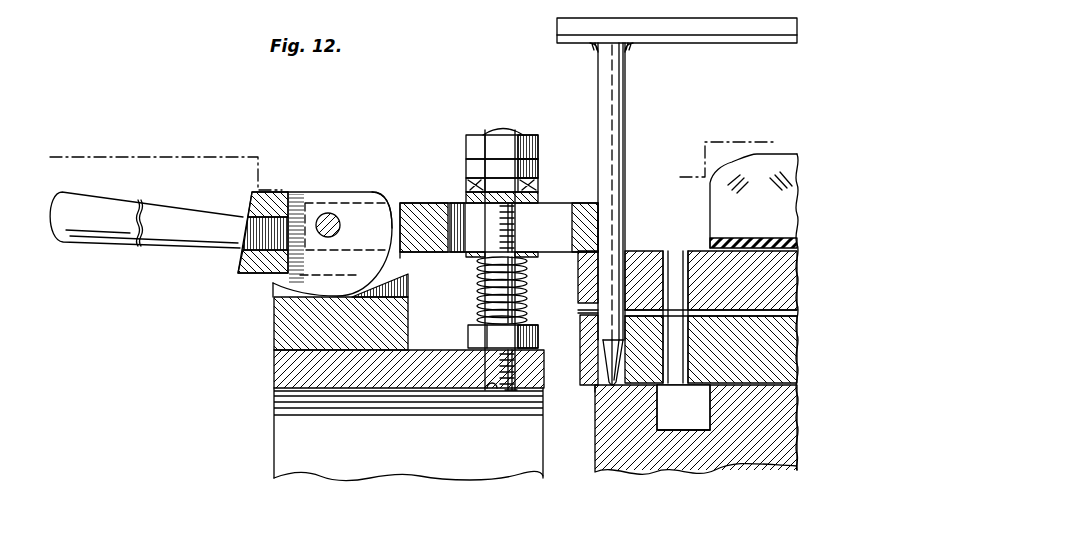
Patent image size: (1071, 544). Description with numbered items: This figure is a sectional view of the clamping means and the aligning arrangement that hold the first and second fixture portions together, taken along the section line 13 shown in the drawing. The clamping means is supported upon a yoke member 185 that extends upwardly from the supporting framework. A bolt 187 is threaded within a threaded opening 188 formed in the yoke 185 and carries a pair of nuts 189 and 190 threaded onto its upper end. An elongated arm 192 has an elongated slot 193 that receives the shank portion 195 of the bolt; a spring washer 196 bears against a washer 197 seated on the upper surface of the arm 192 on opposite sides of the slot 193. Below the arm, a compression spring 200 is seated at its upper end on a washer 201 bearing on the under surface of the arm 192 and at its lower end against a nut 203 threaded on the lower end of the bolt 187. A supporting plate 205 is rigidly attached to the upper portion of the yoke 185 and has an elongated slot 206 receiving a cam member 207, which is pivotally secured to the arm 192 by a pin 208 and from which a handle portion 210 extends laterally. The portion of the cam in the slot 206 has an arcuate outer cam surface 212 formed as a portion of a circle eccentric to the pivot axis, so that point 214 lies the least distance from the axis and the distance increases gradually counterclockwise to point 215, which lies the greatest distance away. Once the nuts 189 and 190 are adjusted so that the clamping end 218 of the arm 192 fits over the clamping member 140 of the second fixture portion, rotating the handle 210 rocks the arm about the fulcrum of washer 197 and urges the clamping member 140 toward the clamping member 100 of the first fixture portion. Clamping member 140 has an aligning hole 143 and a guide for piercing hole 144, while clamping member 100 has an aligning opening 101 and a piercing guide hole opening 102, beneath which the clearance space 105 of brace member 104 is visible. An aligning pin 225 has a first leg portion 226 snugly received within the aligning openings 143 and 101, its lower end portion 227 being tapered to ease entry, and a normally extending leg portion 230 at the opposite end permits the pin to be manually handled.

The section line 13- 13 is at (72, 150).
The handle portion 210 is at (165, 205).
The point on cam spaced greatest distance from pivot axis 215 is at (270, 274).
The cam member 207 is at (303, 200).
The point on cam at least distance from pivot axis 214 is at (383, 193).
The pin 208 is at (338, 223).
The elongated slot 206 is at (398, 254).
The supporting plate 205 is at (274, 338).
The arcuate outer cam surface 212 is at (378, 288).
The yoke member 185 is at (290, 372).
The elongated arm 192 is at (412, 208).
The elongated slot 193 is at (557, 207).
The clamping end 218 is at (600, 220).
The shank portion 195 is at (511, 240).
The nut 189 is at (467, 137).
The nut 190 is at (467, 168).
The spring washer 196 is at (536, 189).
The washer 197 is at (522, 204).
The washer 201 is at (470, 257).
The compression spring 200 is at (517, 285).
The nut 203 is at (539, 336).
The threaded opening 188 is at (492, 386).
The bolt 187 is at (507, 391).
The normally extending leg portion 230 is at (740, 40).
The aligning pin 225 is at (642, 112).
The first leg portion 226 is at (621, 143).
The aligning opening 101 is at (605, 362).
The aligning hole 143 is at (600, 268).
The clamping member 100 is at (580, 383).
The lower end portion 227 is at (598, 396).
The clamping member 140 is at (652, 256).
The guide for piercing hole 144 is at (692, 249).
The brace member 104 is at (621, 470).
The piercing guide hole opening 102 is at (668, 388).
The clearance space 105 is at (661, 430).